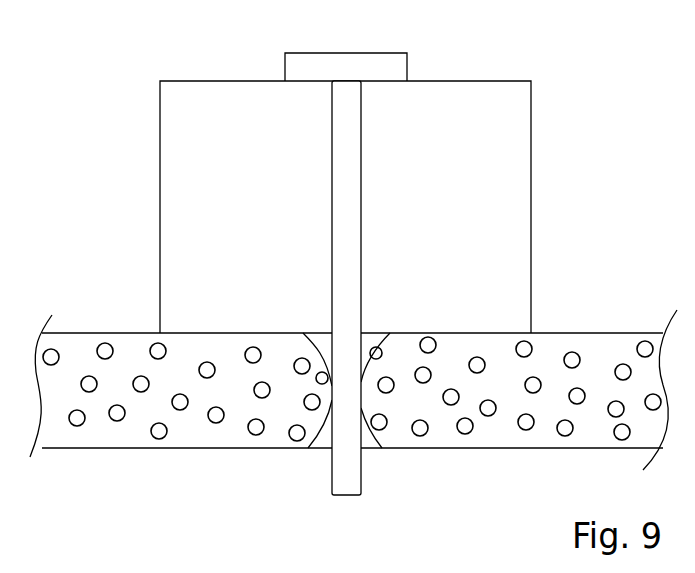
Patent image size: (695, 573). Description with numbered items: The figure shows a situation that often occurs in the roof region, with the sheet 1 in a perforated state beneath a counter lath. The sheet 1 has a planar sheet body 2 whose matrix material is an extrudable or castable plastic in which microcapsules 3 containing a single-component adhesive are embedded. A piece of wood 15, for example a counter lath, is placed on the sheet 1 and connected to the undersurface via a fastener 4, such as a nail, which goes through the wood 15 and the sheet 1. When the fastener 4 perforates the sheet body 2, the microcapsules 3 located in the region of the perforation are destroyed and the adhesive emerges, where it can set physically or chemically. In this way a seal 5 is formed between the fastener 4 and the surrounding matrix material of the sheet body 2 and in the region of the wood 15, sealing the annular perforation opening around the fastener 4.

The sheet 1 is at (570, 265).
The sheet body 2 is at (603, 347).
The microcapsules 3 is at (465, 428).
The fastener 4 is at (340, 157).
The seal 5 is at (328, 435).
The wood 15 is at (502, 157).